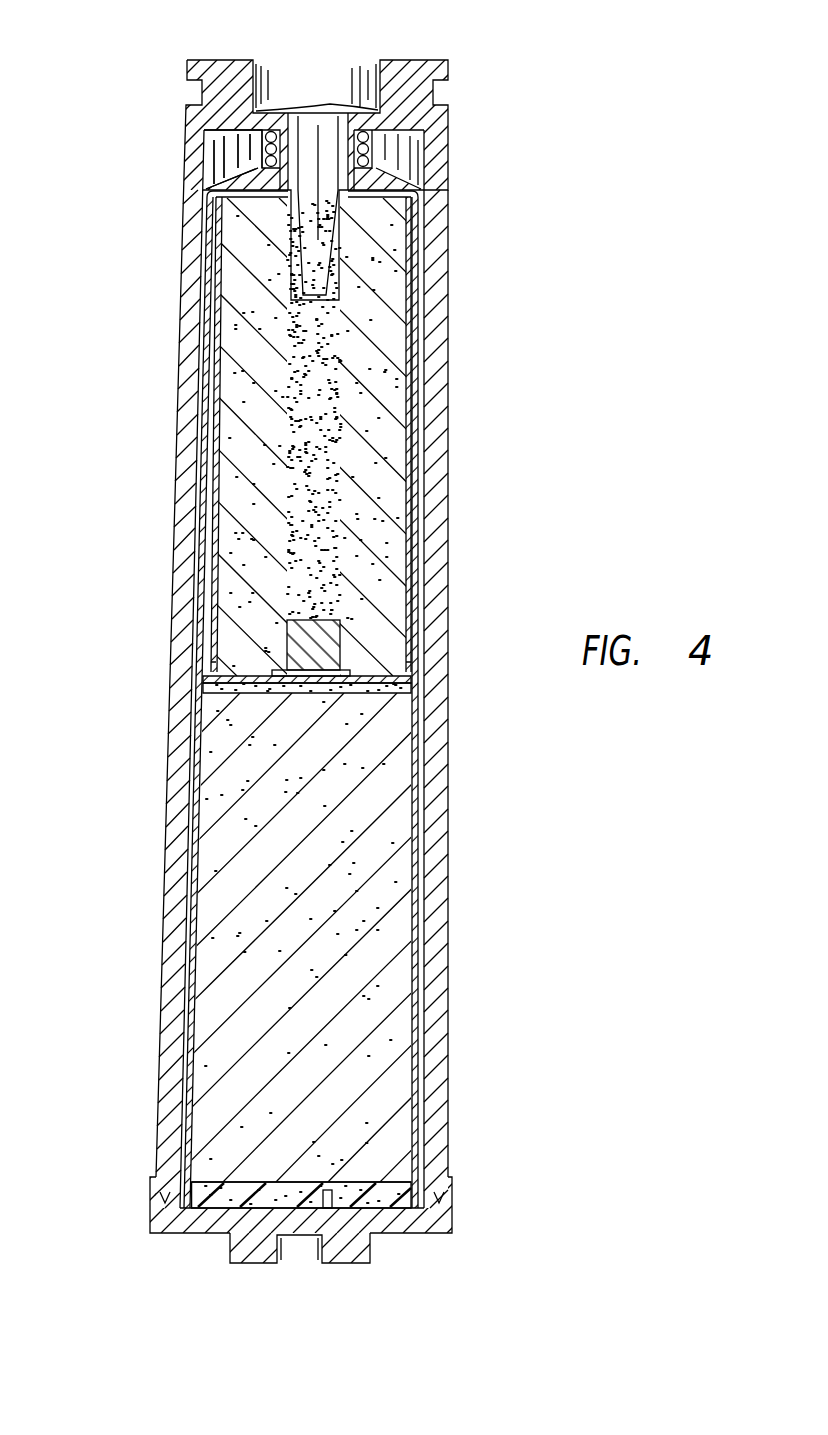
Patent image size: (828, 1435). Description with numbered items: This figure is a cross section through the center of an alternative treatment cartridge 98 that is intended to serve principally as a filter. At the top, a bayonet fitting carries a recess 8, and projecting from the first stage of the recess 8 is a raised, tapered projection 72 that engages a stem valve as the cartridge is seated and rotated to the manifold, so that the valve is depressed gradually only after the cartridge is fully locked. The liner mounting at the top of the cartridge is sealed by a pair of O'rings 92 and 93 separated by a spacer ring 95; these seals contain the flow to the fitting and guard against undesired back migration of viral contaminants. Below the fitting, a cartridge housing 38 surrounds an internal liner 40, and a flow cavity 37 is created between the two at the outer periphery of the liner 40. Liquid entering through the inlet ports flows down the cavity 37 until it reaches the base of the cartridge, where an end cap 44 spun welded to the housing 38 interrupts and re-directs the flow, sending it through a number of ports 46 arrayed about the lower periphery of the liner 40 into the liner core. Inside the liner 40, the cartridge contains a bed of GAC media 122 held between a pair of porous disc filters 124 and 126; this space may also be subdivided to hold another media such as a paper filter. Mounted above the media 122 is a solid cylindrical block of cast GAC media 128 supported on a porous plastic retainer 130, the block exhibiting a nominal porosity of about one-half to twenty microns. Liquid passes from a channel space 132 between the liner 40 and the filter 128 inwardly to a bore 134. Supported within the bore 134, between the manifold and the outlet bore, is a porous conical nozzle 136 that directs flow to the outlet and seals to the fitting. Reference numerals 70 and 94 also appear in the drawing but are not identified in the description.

The recess 8 is at (334, 54).
The flow cavity 37 is at (213, 170).
The cartridge housing 38 is at (446, 931).
The internal liner 40 is at (413, 1036).
The end cap 44 is at (257, 1264).
The ports 46 is at (303, 1211).
The seal rings 70 is at (368, 132).
The tapered projection 72 is at (305, 108).
The O'ring 92 is at (263, 160).
The O'ring 93 is at (266, 133).
The housing cap 94 is at (430, 298).
The spacer ring 95 is at (265, 149).
The alternative treatment cartridge 98 is at (545, 400).
The GAC media bed 122 is at (230, 888).
The porous disc filter 124 is at (220, 1181).
The porous disc filter 126 is at (208, 692).
The GAC media block 128 is at (230, 445).
The porous plastic retainer 130 is at (409, 670).
The channel space 132 is at (408, 598).
The bore 134 is at (337, 466).
The porous conical nozzle 136 is at (342, 250).